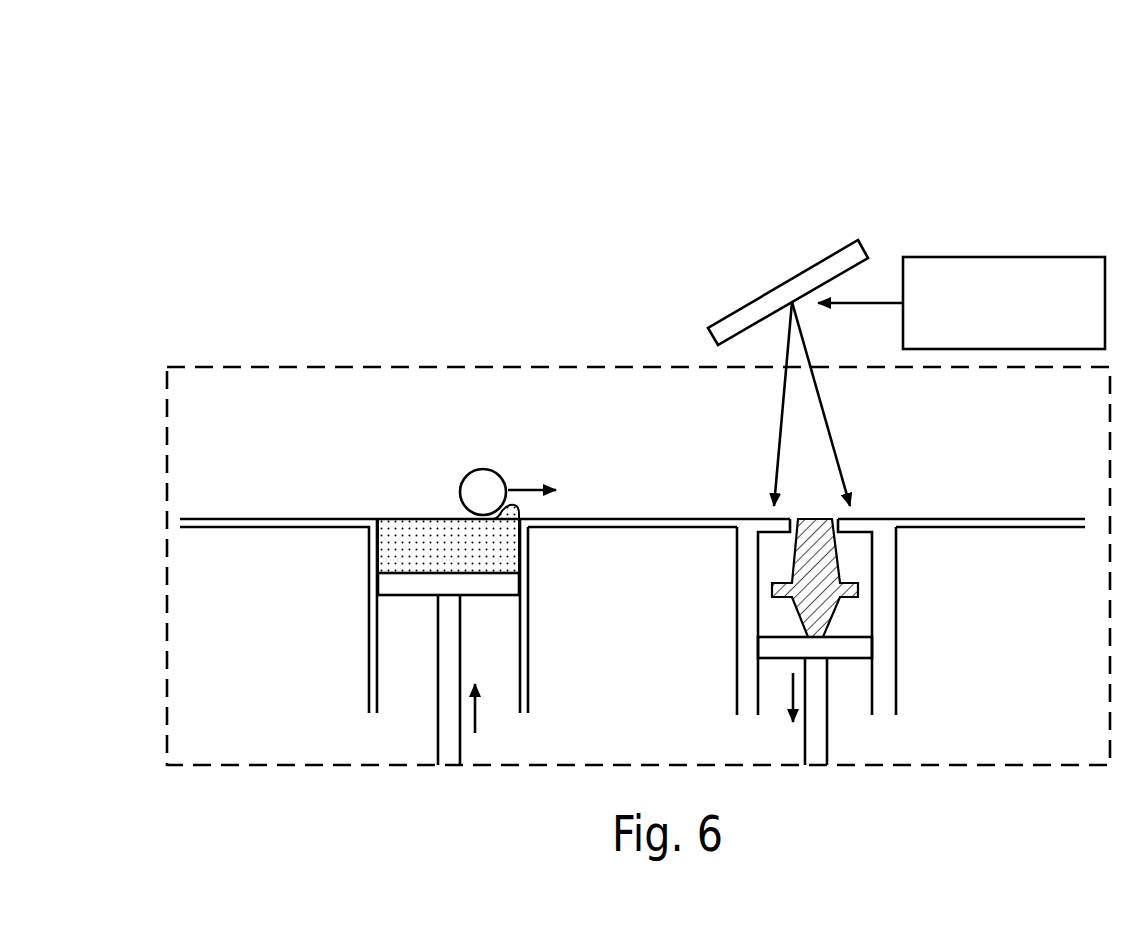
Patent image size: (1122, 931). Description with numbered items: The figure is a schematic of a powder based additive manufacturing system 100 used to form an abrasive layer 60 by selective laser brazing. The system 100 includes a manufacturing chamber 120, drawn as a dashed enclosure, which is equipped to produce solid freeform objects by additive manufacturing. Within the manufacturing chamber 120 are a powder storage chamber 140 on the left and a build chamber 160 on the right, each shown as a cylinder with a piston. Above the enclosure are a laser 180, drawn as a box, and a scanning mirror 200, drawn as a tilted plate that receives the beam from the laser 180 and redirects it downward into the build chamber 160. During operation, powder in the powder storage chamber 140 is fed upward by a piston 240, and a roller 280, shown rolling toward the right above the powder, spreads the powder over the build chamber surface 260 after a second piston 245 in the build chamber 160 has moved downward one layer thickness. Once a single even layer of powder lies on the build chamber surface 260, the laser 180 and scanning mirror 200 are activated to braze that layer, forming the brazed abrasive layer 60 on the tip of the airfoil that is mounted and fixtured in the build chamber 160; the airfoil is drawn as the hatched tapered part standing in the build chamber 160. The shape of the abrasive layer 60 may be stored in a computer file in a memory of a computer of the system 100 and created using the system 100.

The system 100 is at (728, 144).
The manufacturing chamber 120 is at (194, 385).
The powder storage chamber 140 is at (413, 573).
The build chamber 160 is at (837, 596).
The laser 180 is at (1031, 275).
The scanning mirror 200 is at (782, 282).
The piston 240 is at (393, 587).
The piston 245 is at (843, 648).
The build chamber surface 260 is at (820, 506).
The roller 280 is at (480, 487).
The abrasive layer 60 is at (800, 530).